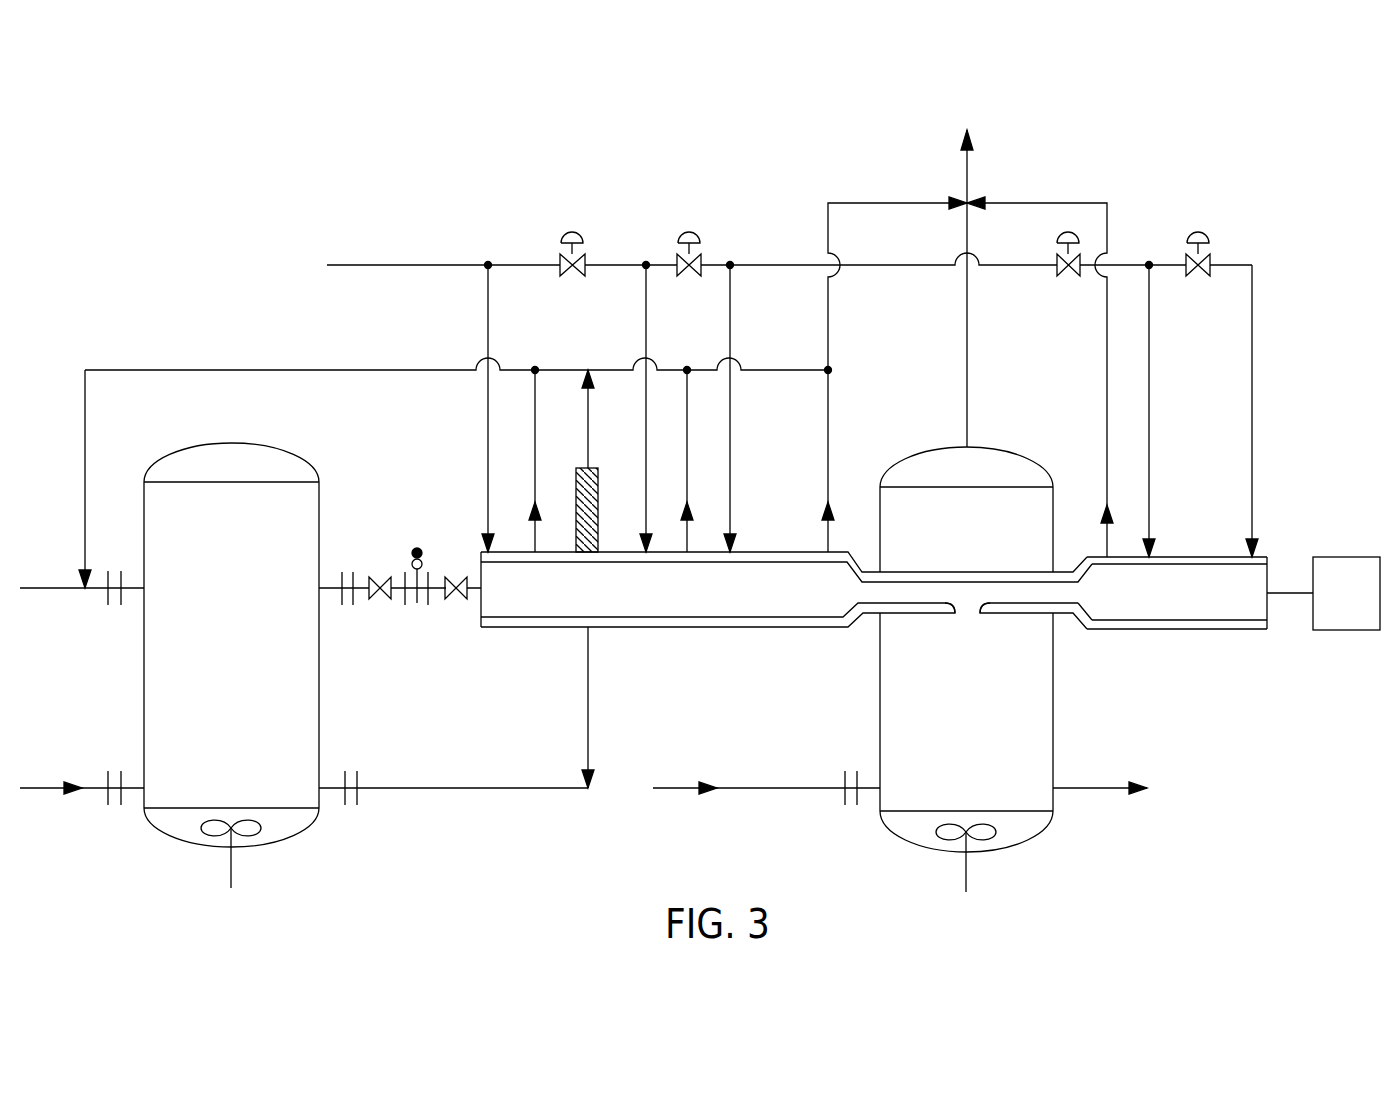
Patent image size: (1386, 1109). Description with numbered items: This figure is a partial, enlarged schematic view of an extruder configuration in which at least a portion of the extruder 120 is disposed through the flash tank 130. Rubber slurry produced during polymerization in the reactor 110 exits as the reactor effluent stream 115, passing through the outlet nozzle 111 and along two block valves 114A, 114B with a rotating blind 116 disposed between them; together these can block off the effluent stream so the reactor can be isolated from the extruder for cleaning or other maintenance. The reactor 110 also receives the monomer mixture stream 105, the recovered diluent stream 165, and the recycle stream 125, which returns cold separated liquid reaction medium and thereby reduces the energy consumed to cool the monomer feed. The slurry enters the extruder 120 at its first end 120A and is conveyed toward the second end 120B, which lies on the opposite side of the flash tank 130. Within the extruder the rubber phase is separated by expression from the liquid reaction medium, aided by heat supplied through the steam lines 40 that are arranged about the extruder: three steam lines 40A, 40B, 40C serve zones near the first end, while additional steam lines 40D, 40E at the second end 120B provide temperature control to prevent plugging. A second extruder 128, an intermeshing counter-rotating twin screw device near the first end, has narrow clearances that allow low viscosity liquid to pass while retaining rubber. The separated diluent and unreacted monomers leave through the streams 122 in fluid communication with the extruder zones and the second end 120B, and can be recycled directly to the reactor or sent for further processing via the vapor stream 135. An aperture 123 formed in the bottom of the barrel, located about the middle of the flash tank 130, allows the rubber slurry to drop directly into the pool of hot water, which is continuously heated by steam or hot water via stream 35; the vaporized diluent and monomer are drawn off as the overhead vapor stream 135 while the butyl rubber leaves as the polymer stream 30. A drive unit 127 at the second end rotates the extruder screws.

The polymer stream 30 is at (1089, 788).
The steam and/or hot water stream 35 is at (746, 788).
The steam lines 40 is at (361, 263).
The steam line 40A is at (487, 304).
The steam line 40B is at (645, 304).
The steam line 40C is at (730, 306).
The additional steam line 40D is at (1149, 316).
The additional steam line 40E is at (1252, 316).
The mixture stream 105 is at (44, 788).
The reactor 110 is at (247, 653).
The outlet nozzle 111 is at (350, 572).
The block valve 114A is at (380, 603).
The block valve 114B is at (456, 603).
The reactor effluent stream 115 is at (386, 468).
The rotating blind 116 is at (422, 551).
The extruder 120 is at (652, 630).
The first end 120A is at (481, 612).
The second end 120B is at (1268, 610).
The streams 122 is at (141, 369).
The aperture 123 is at (971, 603).
The recycle stream 125 is at (430, 790).
The drive unit 127 is at (1365, 603).
The second extruder 128 is at (576, 470).
The flash tank 130 is at (992, 738).
The vapor stream 135 is at (968, 167).
The diluent recovery stream 165 is at (44, 588).